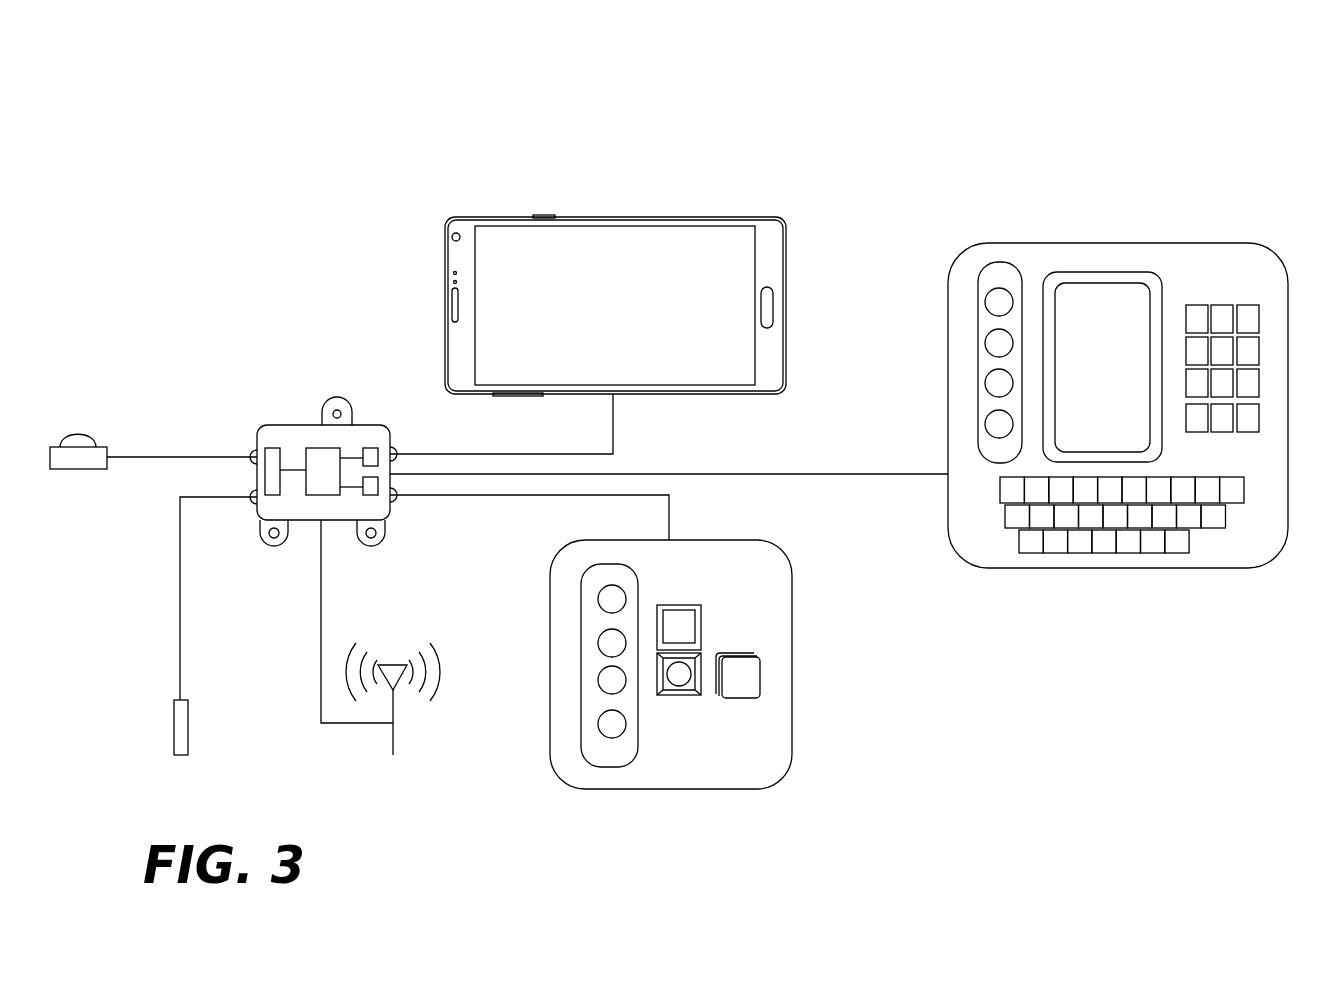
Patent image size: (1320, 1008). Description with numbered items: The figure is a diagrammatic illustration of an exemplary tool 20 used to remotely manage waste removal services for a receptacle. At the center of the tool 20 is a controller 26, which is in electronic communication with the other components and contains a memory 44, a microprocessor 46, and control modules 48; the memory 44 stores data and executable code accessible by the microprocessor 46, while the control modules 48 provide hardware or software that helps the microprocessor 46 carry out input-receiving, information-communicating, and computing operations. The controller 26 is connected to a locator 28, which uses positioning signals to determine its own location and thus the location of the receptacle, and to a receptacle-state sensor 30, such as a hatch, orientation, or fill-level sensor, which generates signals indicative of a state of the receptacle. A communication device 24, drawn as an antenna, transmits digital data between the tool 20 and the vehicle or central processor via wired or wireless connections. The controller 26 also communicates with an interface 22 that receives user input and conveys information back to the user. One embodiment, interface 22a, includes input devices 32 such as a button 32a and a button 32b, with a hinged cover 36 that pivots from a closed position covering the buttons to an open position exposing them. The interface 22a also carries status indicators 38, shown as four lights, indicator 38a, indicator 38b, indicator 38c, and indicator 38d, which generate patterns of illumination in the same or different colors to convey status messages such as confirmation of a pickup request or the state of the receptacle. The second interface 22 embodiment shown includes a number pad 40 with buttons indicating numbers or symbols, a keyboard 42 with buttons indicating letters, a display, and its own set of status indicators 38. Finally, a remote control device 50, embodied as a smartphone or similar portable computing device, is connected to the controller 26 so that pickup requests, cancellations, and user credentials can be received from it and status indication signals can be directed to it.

The tool 20 is at (945, 82).
The interface 22 is at (1244, 248).
The interface 22a is at (780, 548).
The communication device 24 is at (390, 663).
The controller 26 is at (275, 548).
The locator 28 is at (85, 470).
The receptacle-state sensor 30 is at (174, 722).
The input devices 32 is at (719, 669).
The button 32a is at (678, 700).
The button 32b is at (752, 700).
The cover 36 is at (674, 606).
The status indicators 38 is at (1034, 260).
The indicator 38a is at (985, 300).
The indicator 38b is at (985, 343).
The indicator 38c is at (985, 383).
The indicator 38d is at (985, 425).
The number pad 40 is at (1219, 297).
The keyboard 42 is at (1212, 528).
The memory 44 is at (265, 450).
The microprocessor 46 is at (315, 450).
The control module 48 is at (368, 448).
The remote control device 50 is at (788, 258).